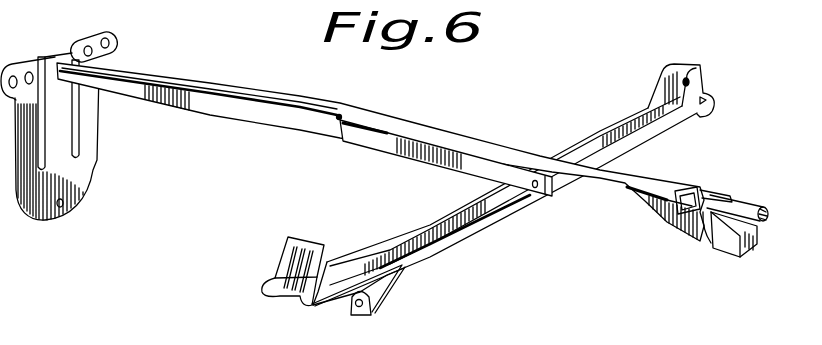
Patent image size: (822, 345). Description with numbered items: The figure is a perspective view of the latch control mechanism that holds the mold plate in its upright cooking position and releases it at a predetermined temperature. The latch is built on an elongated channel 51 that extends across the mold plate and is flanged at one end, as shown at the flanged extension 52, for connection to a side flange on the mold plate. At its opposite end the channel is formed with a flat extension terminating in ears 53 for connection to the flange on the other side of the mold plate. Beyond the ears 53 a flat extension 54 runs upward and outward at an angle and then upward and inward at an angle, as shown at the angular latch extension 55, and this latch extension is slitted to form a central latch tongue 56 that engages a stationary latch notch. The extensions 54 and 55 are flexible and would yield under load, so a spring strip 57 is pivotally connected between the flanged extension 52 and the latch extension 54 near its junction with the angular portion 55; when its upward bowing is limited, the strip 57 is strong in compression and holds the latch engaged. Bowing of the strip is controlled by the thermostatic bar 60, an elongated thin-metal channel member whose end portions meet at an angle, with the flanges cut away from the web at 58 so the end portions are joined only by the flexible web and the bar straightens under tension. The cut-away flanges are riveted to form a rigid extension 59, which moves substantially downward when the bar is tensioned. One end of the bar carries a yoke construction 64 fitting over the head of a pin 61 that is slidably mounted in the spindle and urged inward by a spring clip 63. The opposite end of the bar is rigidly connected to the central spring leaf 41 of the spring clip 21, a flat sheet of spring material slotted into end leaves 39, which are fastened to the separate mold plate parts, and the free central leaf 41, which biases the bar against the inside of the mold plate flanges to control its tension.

The spring clip 21 is at (98, 157).
The end leaves 39 is at (88, 110).
The central spring leaf 41 is at (53, 50).
The elongated channel 51 is at (483, 222).
The flanged extension 52 is at (697, 82).
The ears 53 is at (373, 308).
The latch extension 54 is at (333, 303).
The angular latch extension 55 is at (288, 240).
The central latch tongue 56 is at (282, 305).
The spring strip 57 is at (598, 145).
The cut away portion 58 is at (340, 117).
The extension 59 is at (453, 168).
The thermostatic bar 60 is at (285, 87).
The pin 61 is at (748, 205).
The spring clip 63 is at (710, 240).
The yoke construction 64 is at (713, 198).